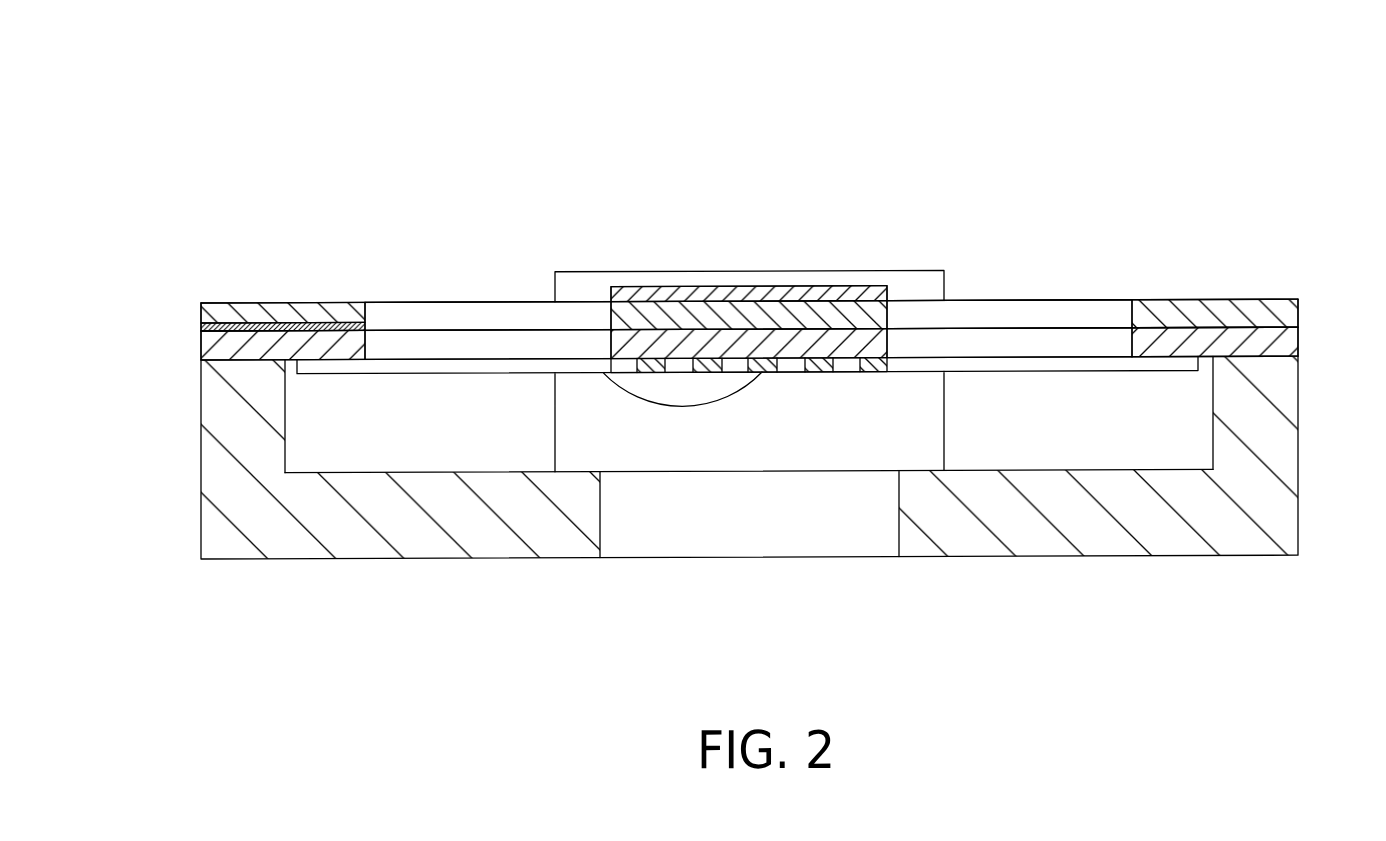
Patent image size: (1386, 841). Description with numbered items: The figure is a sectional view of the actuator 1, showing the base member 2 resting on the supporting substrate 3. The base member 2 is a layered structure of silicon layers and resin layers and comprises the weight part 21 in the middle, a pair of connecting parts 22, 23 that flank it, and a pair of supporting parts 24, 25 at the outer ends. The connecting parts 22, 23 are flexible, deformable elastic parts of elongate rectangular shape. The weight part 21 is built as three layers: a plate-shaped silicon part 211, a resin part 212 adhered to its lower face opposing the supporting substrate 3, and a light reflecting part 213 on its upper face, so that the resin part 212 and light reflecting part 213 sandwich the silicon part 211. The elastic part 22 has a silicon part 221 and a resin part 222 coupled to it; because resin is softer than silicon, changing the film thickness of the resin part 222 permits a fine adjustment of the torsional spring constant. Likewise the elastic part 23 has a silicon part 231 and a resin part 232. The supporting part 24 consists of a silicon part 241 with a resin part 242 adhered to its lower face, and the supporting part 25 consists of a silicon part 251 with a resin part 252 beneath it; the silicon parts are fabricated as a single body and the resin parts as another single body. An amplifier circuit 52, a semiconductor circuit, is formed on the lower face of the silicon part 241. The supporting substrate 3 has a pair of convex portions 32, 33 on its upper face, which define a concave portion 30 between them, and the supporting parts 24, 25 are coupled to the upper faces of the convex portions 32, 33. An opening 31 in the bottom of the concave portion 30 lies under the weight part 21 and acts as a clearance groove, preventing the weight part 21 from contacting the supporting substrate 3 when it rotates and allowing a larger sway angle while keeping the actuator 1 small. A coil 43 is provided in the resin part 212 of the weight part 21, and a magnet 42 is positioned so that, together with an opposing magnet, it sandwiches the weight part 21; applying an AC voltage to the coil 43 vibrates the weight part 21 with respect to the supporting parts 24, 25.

The actuator 1 is at (1092, 107).
The base member 2 is at (1304, 302).
The supporting substrate 3 is at (1298, 508).
The weight part 21 is at (622, 175).
The connecting part 22 is at (383, 225).
The connecting part 23 is at (1095, 226).
The supporting part 24 is at (360, 205).
The supporting part 25 is at (1307, 210).
The concave portion 30 is at (1005, 427).
The opening 31 is at (778, 533).
The convex portion 32 is at (218, 414).
The convex portion 33 is at (1300, 431).
The magnet 42 is at (580, 296).
The coil 43 is at (447, 367).
The amplifier circuit 52 is at (201, 328).
The silicon part 211 is at (727, 321).
The resin part 212 is at (812, 345).
The light reflecting part 213 is at (657, 298).
The silicon part 221 is at (412, 320).
The resin part 222 is at (483, 324).
The silicon part 231 is at (993, 316).
The resin part 232 is at (1062, 346).
The silicon part 241 is at (218, 313).
The resin part 242 is at (323, 317).
The silicon part 251 is at (1176, 316).
The resin part 252 is at (1268, 344).